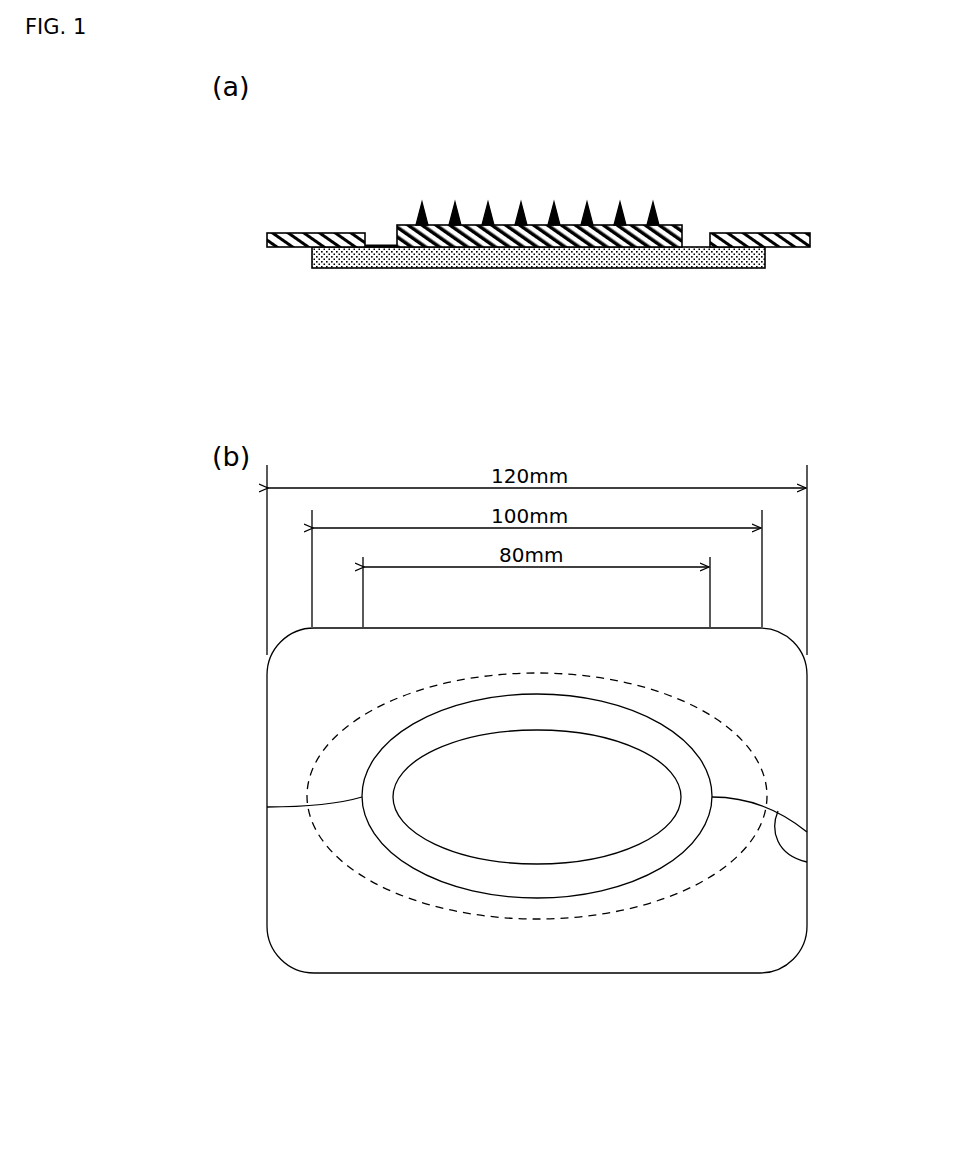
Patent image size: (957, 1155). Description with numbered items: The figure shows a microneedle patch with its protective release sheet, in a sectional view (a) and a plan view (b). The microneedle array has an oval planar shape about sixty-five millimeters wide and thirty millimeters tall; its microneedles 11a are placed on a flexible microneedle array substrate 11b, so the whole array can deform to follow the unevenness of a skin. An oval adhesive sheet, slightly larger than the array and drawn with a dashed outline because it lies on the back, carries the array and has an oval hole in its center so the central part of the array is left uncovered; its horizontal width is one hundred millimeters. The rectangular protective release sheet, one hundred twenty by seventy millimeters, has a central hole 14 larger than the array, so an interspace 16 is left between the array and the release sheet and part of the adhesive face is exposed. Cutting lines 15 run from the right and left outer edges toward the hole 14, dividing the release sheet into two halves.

The microneedles 11a is at (420, 213).
The microneedle array substrate 11b is at (506, 226).
The hole 14 is at (588, 884).
The cutting lines 15 is at (807, 862).
The interspace 16 is at (385, 233).